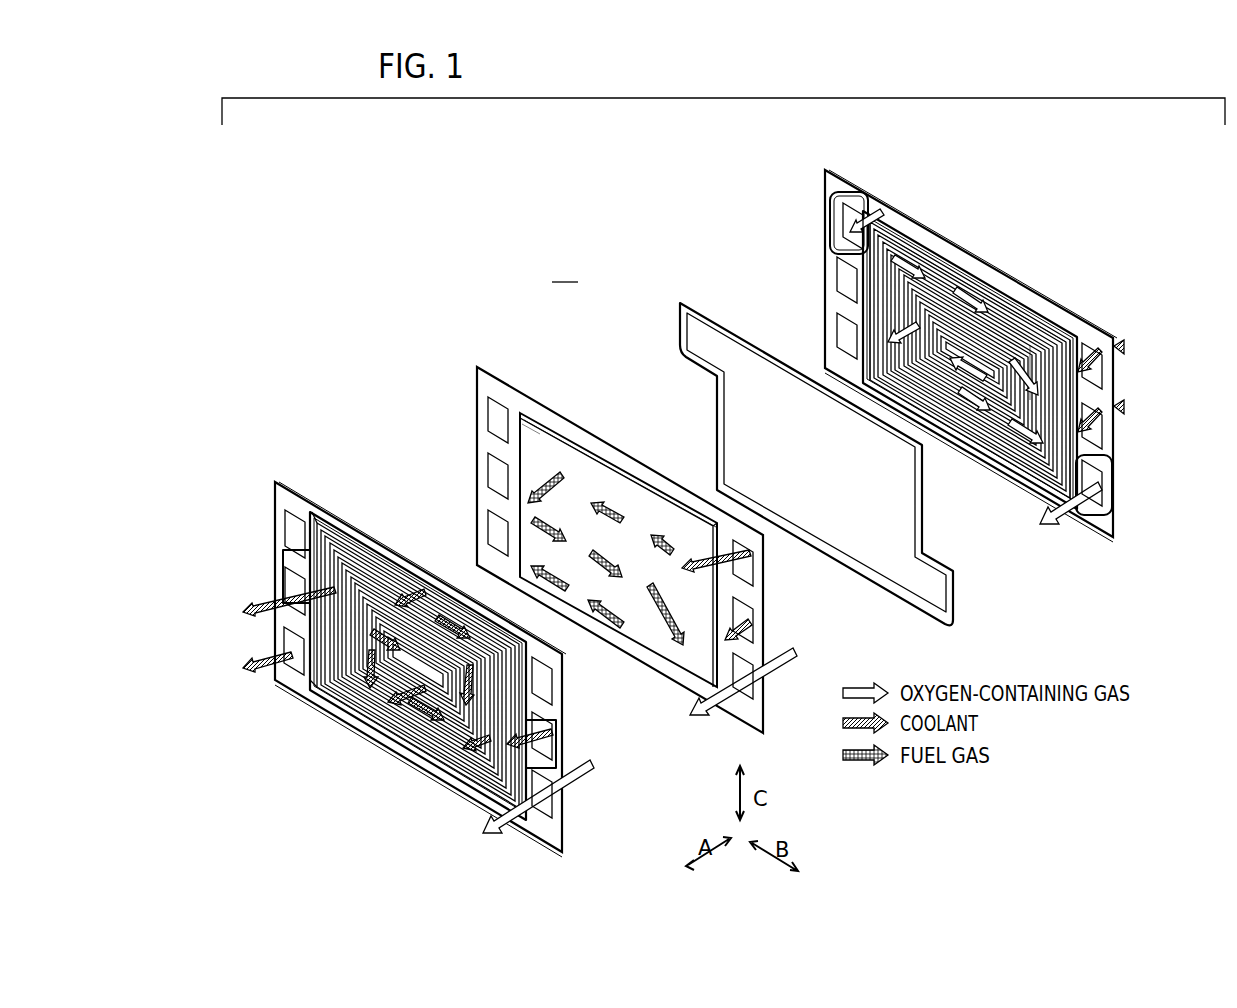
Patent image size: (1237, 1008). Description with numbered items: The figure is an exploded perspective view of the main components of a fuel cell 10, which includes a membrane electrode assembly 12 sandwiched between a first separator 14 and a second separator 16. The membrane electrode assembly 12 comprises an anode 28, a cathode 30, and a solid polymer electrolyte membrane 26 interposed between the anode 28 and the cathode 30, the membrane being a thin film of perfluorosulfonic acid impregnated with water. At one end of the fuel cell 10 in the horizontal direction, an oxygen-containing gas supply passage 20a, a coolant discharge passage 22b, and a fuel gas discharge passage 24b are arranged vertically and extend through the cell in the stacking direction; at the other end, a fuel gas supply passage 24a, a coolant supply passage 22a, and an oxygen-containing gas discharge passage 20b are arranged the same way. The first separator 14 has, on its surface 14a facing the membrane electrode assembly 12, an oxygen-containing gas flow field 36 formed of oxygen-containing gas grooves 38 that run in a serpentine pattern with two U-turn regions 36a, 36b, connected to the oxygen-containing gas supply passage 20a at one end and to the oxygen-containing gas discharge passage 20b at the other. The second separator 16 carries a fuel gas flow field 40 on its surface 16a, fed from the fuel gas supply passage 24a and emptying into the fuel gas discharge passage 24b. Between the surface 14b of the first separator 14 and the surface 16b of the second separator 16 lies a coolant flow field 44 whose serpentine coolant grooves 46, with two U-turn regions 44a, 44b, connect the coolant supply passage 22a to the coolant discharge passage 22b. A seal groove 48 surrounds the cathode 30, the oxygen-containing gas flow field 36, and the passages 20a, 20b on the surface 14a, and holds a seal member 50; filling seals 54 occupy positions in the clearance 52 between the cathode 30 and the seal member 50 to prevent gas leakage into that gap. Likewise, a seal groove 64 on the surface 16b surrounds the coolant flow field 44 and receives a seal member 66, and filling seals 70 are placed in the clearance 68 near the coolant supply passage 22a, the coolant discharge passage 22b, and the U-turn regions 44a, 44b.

The fuel cell 10 is at (566, 270).
The membrane electrode assembly 12 is at (477, 367).
The first separator 14 is at (825, 170).
The surface of the first separator 14a is at (965, 438).
The surface of the first separator 14b is at (998, 455).
The second separator 16 is at (275, 482).
The surface of the second separator 16a is at (460, 788).
The surface of the second separator 16b is at (437, 763).
The oxygen-containing gas supply passage 20a is at (292, 532).
The oxygen-containing gas discharge passage 20b is at (550, 803).
The coolant supply passage 22a is at (550, 746).
The coolant discharge passage 22b is at (292, 582).
The fuel gas supply passage 24a is at (550, 686).
The fuel gas discharge passage 24b is at (292, 646).
The solid polymer electrolyte membrane 26 is at (742, 715).
The anode 28 is at (540, 450).
The cathode 30 is at (634, 497).
The oxygen-containing gas flow field 36 is at (942, 262).
The U-turn region 36a is at (1092, 395).
The U-turn region 36b is at (876, 320).
The oxygen-containing gas grooves 38 is at (1036, 330).
The fuel gas flow field 40 is at (390, 548).
The coolant flow field 44 is at (370, 545).
The U-turn region 44a is at (288, 555).
The U-turn region 44b is at (492, 800).
The coolant grooves 46 is at (345, 695).
The seal groove 48 is at (968, 290).
The seal member 50 is at (683, 303).
The clearance 52 is at (1042, 470).
The filling seals 54 is at (884, 218).
The seal groove 64 is at (402, 735).
The seal member 66 is at (376, 712).
The clearance 68 is at (308, 690).
The filling seals 70 is at (322, 527).